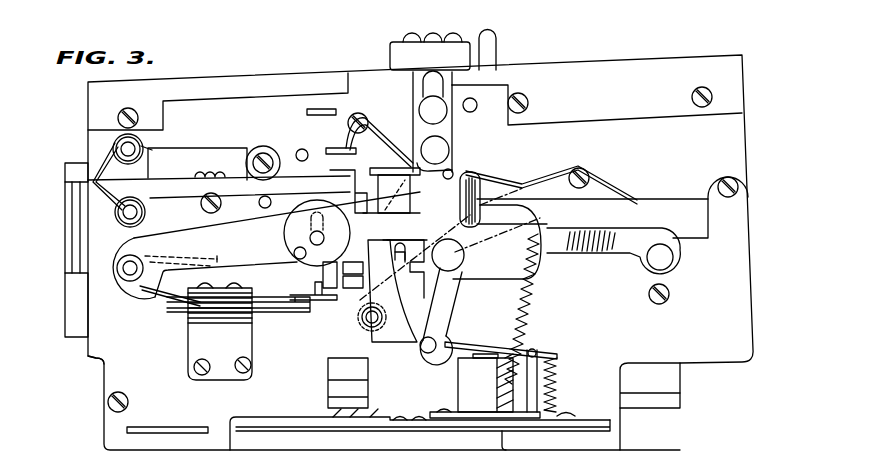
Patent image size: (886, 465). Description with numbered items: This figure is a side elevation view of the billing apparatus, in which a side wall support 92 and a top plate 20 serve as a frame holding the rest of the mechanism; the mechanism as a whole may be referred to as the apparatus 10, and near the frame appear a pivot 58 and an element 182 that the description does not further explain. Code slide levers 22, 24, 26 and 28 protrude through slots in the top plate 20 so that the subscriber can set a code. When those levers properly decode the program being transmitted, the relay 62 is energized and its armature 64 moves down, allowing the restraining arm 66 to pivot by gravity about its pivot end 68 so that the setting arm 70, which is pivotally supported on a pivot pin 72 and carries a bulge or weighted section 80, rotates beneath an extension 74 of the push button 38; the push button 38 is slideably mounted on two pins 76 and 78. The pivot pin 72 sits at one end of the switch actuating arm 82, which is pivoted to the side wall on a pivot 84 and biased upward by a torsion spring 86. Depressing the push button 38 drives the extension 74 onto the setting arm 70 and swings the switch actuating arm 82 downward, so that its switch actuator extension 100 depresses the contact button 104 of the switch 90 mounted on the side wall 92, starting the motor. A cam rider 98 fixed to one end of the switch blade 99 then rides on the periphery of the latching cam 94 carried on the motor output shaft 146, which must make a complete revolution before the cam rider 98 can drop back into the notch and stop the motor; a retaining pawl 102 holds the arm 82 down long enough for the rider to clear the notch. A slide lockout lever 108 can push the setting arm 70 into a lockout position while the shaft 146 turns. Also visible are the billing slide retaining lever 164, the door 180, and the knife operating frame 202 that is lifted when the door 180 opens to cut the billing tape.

The latch arm 10 is at (450, 264).
The top plate 20 is at (572, 62).
The code slide lever 22 is at (412, 34).
The code slide lever 24 is at (453, 33).
The code slide lever 26 is at (490, 35).
The code slide lever 28 is at (433, 33).
The push button 38 is at (390, 51).
The pivot 58 is at (361, 321).
The relay 62 is at (458, 389).
The armature 64 is at (478, 345).
The restraining arm 66 is at (478, 301).
The pivot end 68 is at (422, 355).
The setting arm 70 is at (462, 176).
The pivot pin 72 is at (449, 272).
The extension 74 is at (410, 158).
The pin 76 is at (449, 112).
The pin 78 is at (451, 146).
The weighted section 80 is at (548, 292).
The switch actuating arm 82 is at (325, 208).
The pivot 84 is at (127, 282).
The torsion spring 86 is at (163, 305).
The switch 90 is at (256, 312).
The side wall support 92 is at (106, 373).
The latching cam 94 is at (268, 208).
The cam rider 98 is at (310, 286).
The switch blade 99 is at (326, 292).
The switch actuator extension 100 is at (343, 136).
The retaining pawl 102 is at (294, 254).
The contact button 104 is at (372, 335).
The slide lockout lever 108 is at (396, 343).
The output shaft 146 is at (310, 238).
The billing slide retaining lever 164 is at (607, 246).
The door 180 is at (64, 229).
The block 182 is at (72, 163).
The knife operating frame 202 is at (686, 387).